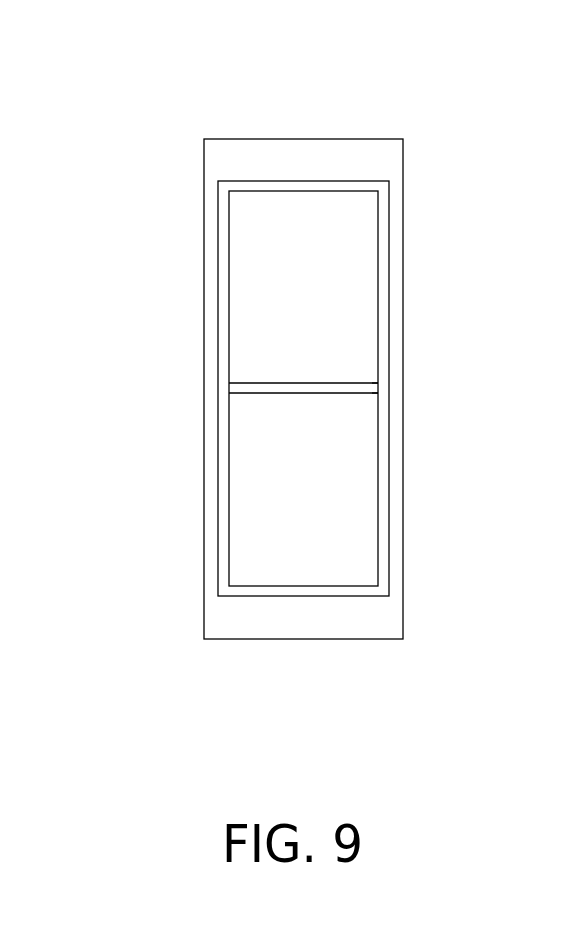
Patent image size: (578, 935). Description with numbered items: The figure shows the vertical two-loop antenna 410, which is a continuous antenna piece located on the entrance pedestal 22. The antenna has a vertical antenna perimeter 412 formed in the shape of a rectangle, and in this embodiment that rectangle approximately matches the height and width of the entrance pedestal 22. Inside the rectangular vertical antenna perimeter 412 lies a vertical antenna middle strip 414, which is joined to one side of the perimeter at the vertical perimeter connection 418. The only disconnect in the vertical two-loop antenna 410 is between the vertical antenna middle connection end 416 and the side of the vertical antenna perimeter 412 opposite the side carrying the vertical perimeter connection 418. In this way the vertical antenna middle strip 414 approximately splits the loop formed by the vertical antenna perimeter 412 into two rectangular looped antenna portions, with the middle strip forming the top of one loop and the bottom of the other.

The vertical two-loop antenna 410 is at (420, 73).
The entrance pedestal 22 is at (220, 163).
The vertical antenna perimeter 412 is at (263, 592).
The vertical antenna middle strip 414 is at (322, 385).
The vertical antenna middle connection end 416 is at (233, 390).
The vertical perimeter connection 418 is at (377, 388).